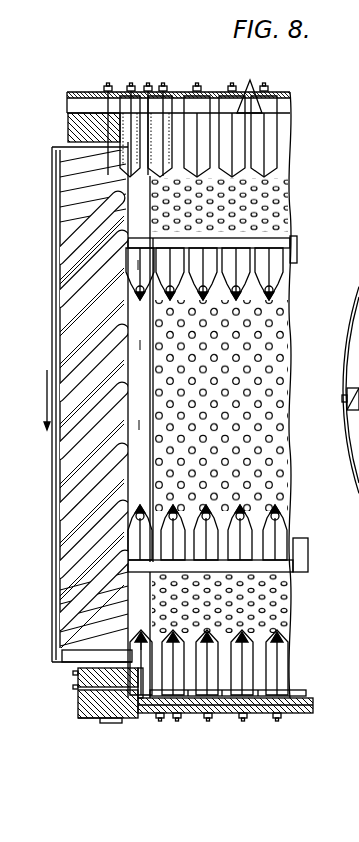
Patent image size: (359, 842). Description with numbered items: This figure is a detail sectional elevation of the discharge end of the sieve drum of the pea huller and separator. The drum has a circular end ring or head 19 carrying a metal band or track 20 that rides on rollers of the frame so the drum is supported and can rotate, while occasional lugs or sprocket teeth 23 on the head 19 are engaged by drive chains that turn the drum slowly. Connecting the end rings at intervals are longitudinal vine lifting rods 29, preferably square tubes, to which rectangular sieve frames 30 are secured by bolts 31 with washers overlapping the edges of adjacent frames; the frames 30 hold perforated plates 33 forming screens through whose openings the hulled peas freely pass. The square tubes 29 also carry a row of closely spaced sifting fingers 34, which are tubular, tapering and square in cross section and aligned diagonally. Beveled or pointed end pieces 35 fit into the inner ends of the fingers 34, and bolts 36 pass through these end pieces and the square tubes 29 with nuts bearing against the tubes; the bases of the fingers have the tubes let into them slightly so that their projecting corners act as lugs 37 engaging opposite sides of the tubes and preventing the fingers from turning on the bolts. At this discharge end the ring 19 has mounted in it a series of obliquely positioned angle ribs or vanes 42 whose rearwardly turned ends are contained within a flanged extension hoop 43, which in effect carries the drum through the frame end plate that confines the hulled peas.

The ends or heads 19 is at (80, 707).
The metal bands or tracks 20 is at (93, 720).
The lugs or sprocket teeth 23 is at (90, 92).
The longitudinal vine lifting rods 29 is at (72, 108).
The sieve frames 30 is at (307, 706).
The bolts 31 is at (148, 97).
The perforated plates 33 is at (275, 200).
The sifting fingers 34 is at (273, 153).
The end pieces 35 is at (139, 420).
The bolts 36 is at (121, 99).
The lugs 37 is at (252, 77).
The angle ribs or vanes 42 is at (84, 481).
The flanged extension hoop 43 is at (63, 148).